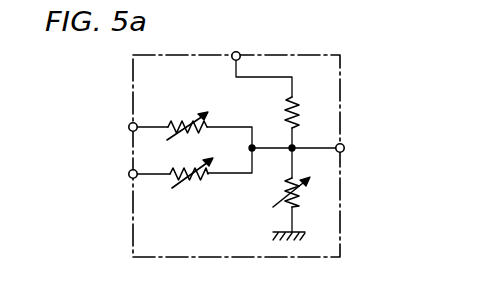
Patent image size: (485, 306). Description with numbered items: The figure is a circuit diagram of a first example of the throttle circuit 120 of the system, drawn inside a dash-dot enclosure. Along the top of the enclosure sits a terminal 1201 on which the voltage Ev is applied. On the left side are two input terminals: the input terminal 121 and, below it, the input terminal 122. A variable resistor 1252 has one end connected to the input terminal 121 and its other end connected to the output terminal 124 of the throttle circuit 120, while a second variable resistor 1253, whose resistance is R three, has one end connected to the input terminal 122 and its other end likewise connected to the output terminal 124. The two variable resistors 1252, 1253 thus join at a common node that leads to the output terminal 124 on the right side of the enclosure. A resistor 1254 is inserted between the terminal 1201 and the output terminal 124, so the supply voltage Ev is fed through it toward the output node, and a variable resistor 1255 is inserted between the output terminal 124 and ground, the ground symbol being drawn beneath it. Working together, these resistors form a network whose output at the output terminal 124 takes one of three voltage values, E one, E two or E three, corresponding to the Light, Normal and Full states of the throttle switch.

The throttle circuit 120 is at (133, 210).
The input terminal 121 is at (115, 127).
The input terminal 122 is at (113, 174).
The output terminal 124 is at (359, 150).
The terminal 1201 is at (240, 53).
The variable resistor 1252 is at (187, 120).
The variable resistor 1253 is at (185, 185).
The resistor 1254 is at (300, 103).
The variable resistor 1255 is at (300, 193).